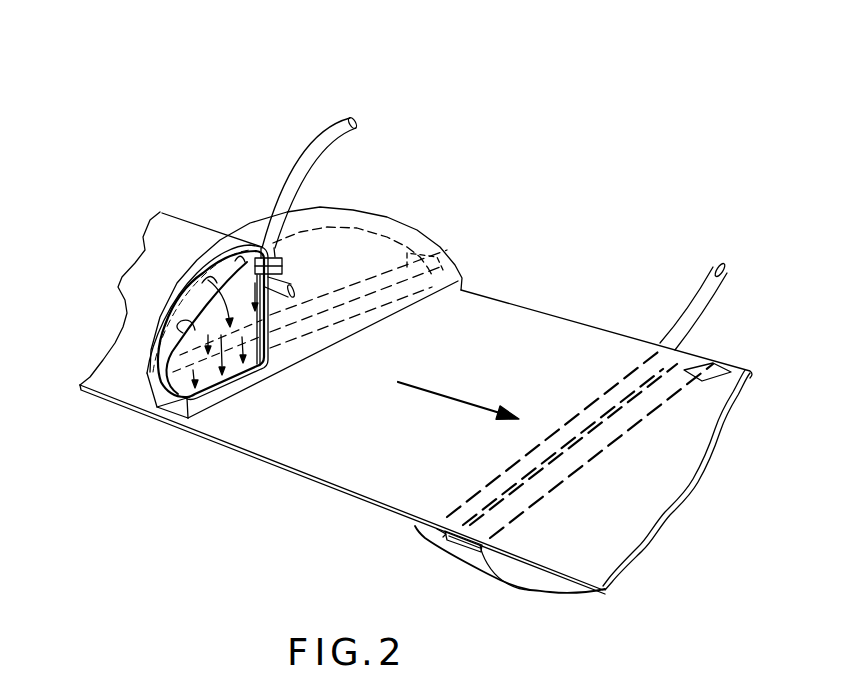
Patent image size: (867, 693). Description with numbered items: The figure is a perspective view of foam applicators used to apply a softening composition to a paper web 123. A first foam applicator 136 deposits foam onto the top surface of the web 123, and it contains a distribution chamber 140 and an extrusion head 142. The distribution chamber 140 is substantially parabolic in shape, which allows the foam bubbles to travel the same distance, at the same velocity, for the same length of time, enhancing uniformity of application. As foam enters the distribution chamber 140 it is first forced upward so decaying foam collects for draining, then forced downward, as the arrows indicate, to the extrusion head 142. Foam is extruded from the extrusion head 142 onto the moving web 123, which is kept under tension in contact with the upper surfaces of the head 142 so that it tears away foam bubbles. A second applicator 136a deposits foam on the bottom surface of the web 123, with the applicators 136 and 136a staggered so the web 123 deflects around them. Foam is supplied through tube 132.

The web 123 is at (577, 323).
The inlet tube 132 is at (317, 133).
The foam applicator 136 is at (401, 208).
The second foam applicator 136a is at (538, 604).
The distribution chamber 140 is at (218, 262).
The extrusion head 142 is at (177, 411).